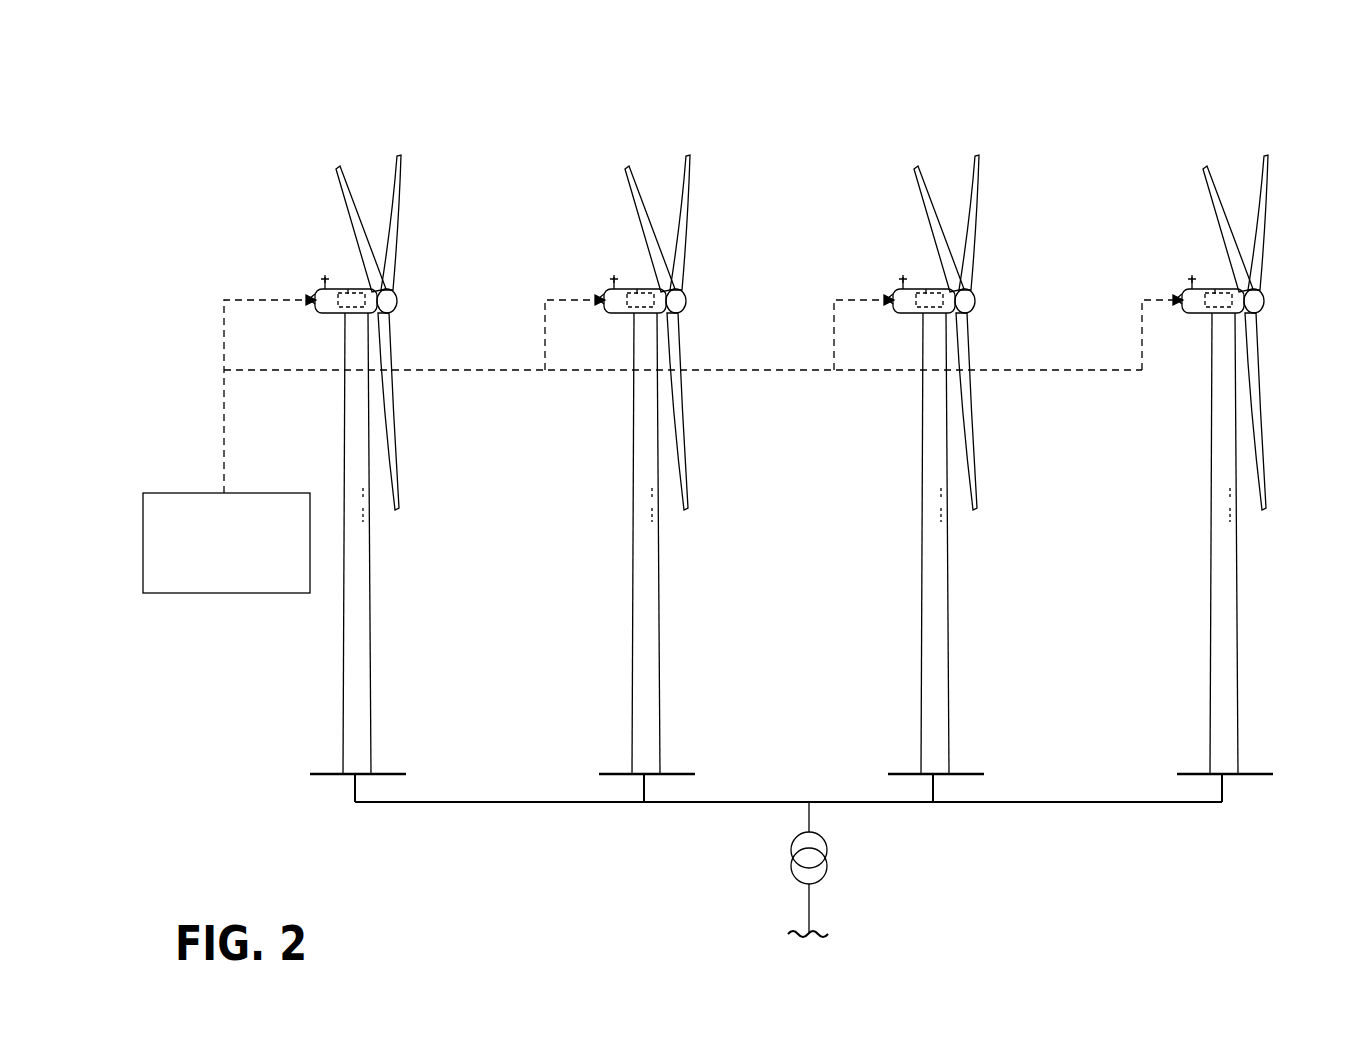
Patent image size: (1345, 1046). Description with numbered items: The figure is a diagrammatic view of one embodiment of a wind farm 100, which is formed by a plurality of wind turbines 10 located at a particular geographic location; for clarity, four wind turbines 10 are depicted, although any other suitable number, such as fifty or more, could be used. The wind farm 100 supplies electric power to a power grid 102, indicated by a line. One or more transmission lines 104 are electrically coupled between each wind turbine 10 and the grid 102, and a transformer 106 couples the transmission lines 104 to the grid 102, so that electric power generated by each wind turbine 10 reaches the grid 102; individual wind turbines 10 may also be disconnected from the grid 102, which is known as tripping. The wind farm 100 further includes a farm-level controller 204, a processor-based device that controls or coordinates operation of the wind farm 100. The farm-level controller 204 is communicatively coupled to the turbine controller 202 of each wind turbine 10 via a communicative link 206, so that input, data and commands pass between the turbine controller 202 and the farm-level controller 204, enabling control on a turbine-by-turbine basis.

The wind farm 100 is at (238, 134).
The wind turbine 10 is at (817, 451).
The turbine controller 202 is at (747, 264).
The farm-level controller 204 is at (222, 594).
The communicative link 206 is at (1042, 372).
The transmission line 104 is at (508, 803).
The transformer 106 is at (831, 865).
The power grid 102 is at (810, 901).